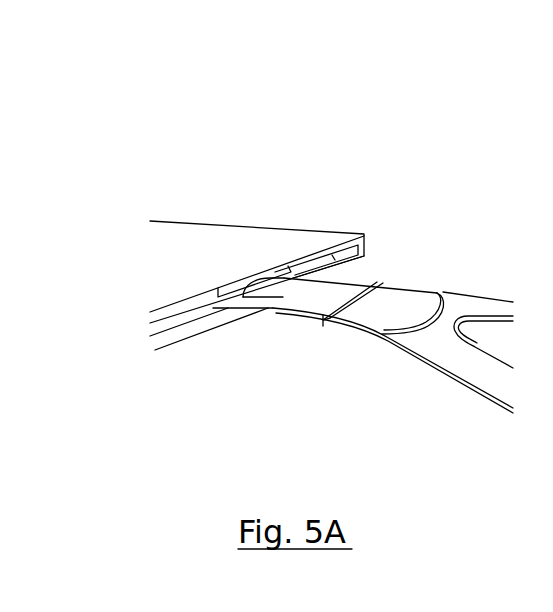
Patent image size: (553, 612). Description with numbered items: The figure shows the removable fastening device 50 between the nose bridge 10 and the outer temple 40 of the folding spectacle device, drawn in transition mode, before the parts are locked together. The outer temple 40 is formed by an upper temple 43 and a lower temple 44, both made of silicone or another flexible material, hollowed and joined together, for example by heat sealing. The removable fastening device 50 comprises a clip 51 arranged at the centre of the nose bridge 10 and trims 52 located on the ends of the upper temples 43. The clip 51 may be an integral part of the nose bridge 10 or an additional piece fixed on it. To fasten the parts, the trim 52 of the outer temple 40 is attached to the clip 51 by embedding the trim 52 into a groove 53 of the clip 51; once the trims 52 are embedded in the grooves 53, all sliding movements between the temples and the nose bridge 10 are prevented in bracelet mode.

The nose bridge 10 is at (447, 356).
The outer temple 40 is at (195, 288).
The upper temple 43 is at (270, 242).
The lower temple 44 is at (163, 350).
The removable fastening device 50 is at (358, 276).
The clip 51 is at (403, 297).
The trim 52 is at (250, 303).
The groove 53 is at (323, 318).